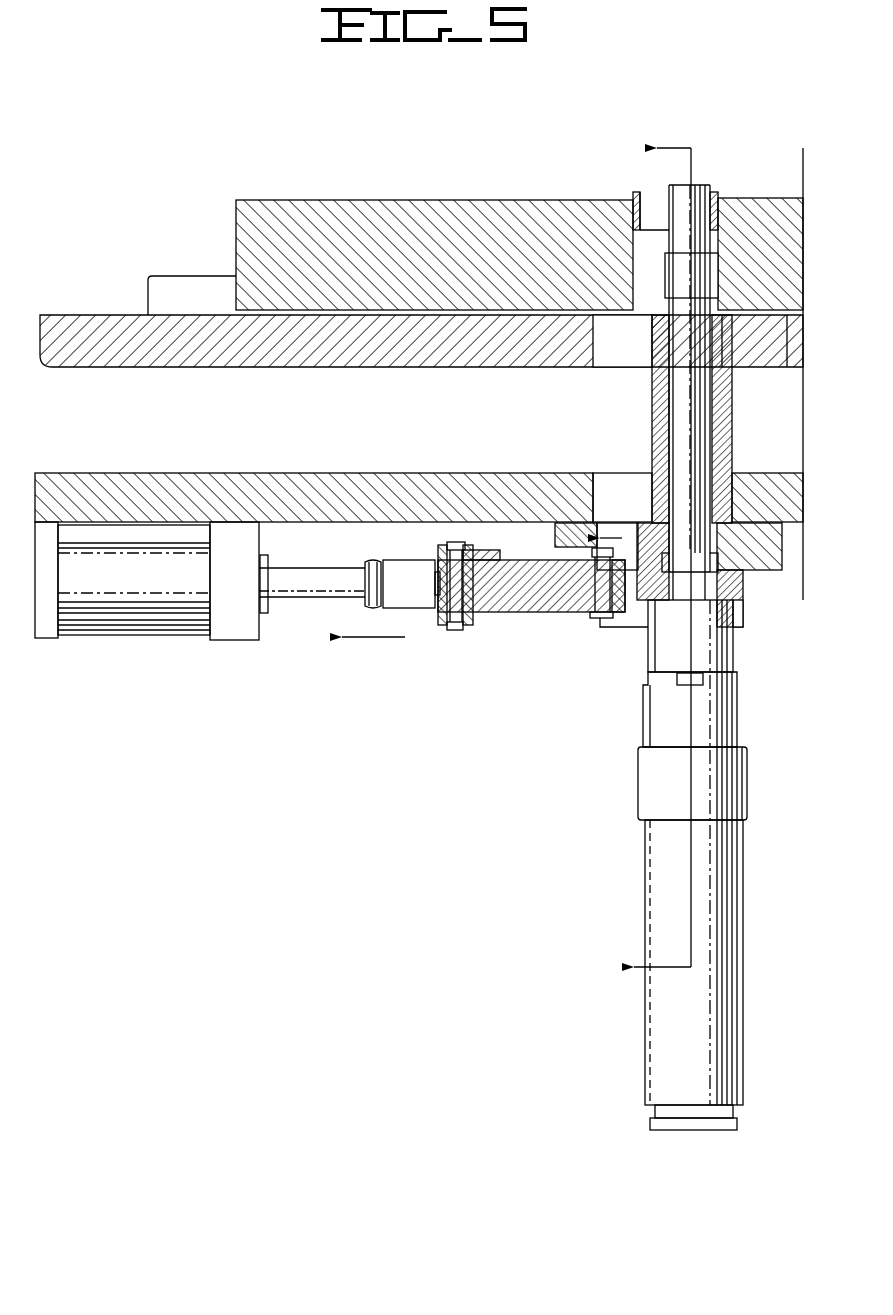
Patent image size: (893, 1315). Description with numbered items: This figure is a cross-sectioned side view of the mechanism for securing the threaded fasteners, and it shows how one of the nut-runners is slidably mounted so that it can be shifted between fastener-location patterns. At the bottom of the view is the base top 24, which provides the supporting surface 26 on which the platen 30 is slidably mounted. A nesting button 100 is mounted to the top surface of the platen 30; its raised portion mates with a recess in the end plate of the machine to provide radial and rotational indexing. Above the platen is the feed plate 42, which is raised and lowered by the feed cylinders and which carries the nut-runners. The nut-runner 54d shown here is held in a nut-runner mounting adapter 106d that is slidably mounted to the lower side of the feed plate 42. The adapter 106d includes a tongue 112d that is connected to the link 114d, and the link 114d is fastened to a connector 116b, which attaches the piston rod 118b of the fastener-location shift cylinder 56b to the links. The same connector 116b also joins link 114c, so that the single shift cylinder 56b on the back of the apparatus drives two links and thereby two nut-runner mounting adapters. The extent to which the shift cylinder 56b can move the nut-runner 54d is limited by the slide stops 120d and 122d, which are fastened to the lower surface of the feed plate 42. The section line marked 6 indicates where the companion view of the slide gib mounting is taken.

The section line 6- 6 is at (651, 558).
The base top 24 is at (52, 315).
The supporting surface 26 is at (127, 314).
The platen 30 is at (236, 210).
The feed plate 42 is at (803, 495).
The nut-runner 54d is at (745, 785).
The fastener-location shift cylinder 56b is at (138, 637).
The nesting button 100 is at (718, 196).
The nut-runner mounting adapter 106d is at (745, 590).
The tongue 112d is at (577, 597).
The link 114c is at (438, 553).
The link 114d is at (508, 612).
The coupling block 116b is at (427, 612).
The piston rod 118b is at (278, 603).
The slide stop 120d is at (555, 532).
The slide stop 122d is at (783, 551).